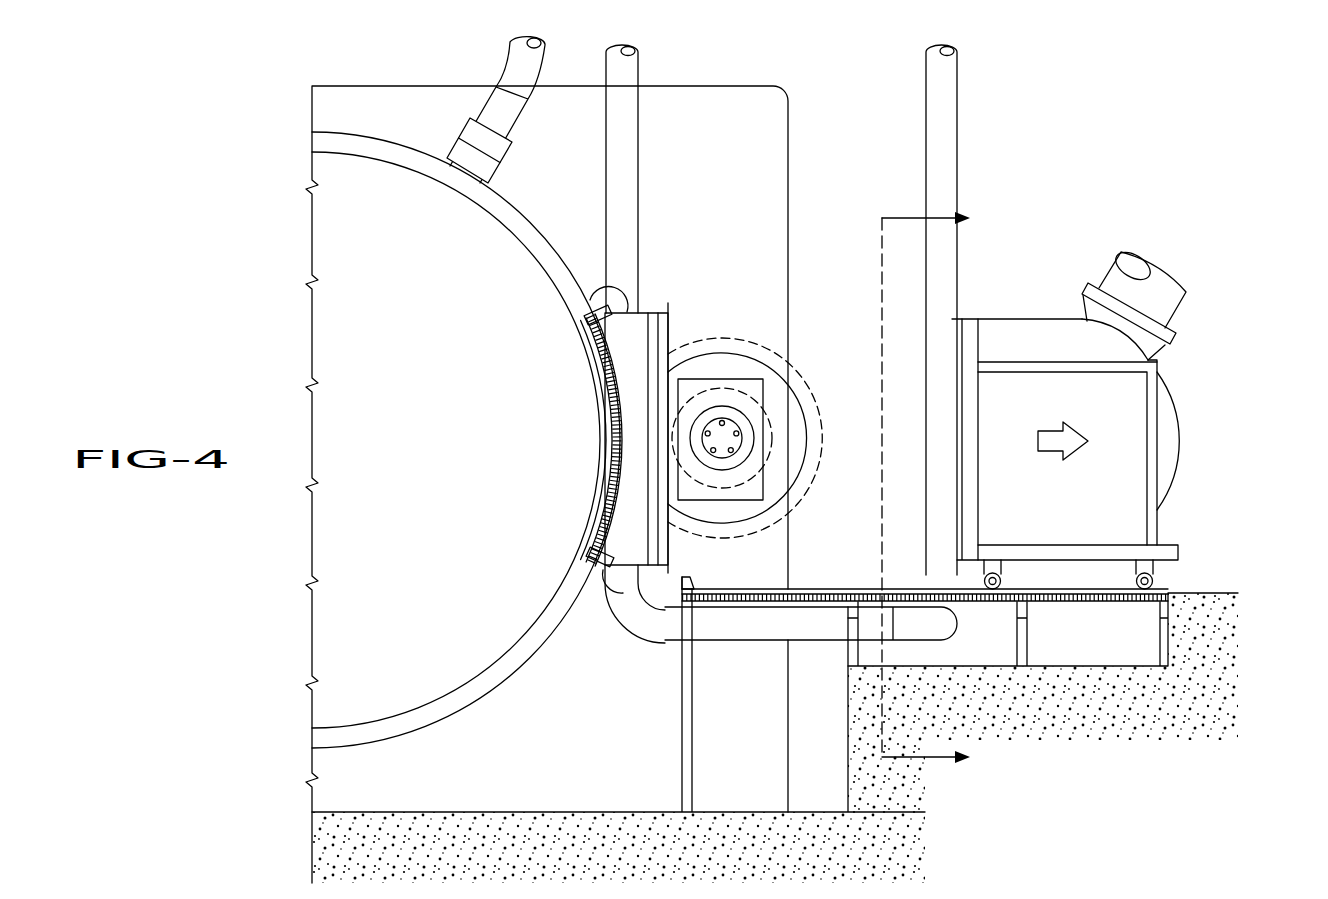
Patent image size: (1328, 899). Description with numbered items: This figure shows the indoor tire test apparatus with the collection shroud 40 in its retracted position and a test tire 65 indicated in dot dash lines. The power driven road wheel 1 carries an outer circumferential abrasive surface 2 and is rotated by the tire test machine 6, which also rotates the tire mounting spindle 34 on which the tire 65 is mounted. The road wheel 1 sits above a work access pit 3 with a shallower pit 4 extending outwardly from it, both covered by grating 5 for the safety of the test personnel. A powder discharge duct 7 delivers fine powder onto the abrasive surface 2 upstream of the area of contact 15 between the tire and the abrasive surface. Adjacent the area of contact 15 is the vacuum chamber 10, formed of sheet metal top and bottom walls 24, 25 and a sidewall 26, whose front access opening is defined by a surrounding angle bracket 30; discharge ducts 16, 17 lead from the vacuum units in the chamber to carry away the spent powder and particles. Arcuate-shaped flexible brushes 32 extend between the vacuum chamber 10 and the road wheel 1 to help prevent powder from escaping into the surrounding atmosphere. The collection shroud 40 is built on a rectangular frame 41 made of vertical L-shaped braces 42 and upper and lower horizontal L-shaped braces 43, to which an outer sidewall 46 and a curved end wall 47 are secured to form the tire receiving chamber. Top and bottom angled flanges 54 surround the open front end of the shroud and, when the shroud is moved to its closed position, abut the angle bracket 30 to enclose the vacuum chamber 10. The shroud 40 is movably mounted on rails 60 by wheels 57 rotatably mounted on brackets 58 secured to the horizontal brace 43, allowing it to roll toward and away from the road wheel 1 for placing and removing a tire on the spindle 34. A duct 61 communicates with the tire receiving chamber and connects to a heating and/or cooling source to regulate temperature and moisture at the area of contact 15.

The road wheel 1 is at (445, 712).
The outer circumferential abrasive surface 2 is at (488, 690).
The work access pit 3 is at (820, 777).
The shallower pits 4 is at (1133, 642).
The grating 5 is at (1093, 632).
The tire test machine 6 is at (787, 140).
The powder discharge duct 7 is at (507, 118).
The vacuum chamber 10 is at (600, 497).
The area of contact 15 is at (600, 432).
The discharge duct 16 is at (950, 125).
The discharge duct 17 is at (630, 176).
The top wall 24 is at (600, 305).
The bottom wall 25 is at (592, 573).
The sidewall 26 is at (600, 540).
The angle bracket 30 is at (672, 326).
The arcuate-shaped flexible brushes 32 is at (600, 380).
The tire mounting spindle 34 is at (735, 426).
The collection shroud 40 is at (1190, 425).
The frame 41 is at (1190, 549).
The vertical L-shaped braces 42 is at (975, 405).
The horizontal L-shaped braces 43 is at (1058, 362).
The outer sidewall 46 is at (1125, 493).
The curved end wall 47 is at (1170, 390).
The top and bottom angled flanges 54 is at (962, 318).
The wheels 57 is at (995, 602).
The brackets 58 is at (993, 575).
The rails 60 is at (805, 589).
The duct 61 is at (1165, 287).
The tire 65 is at (745, 335).